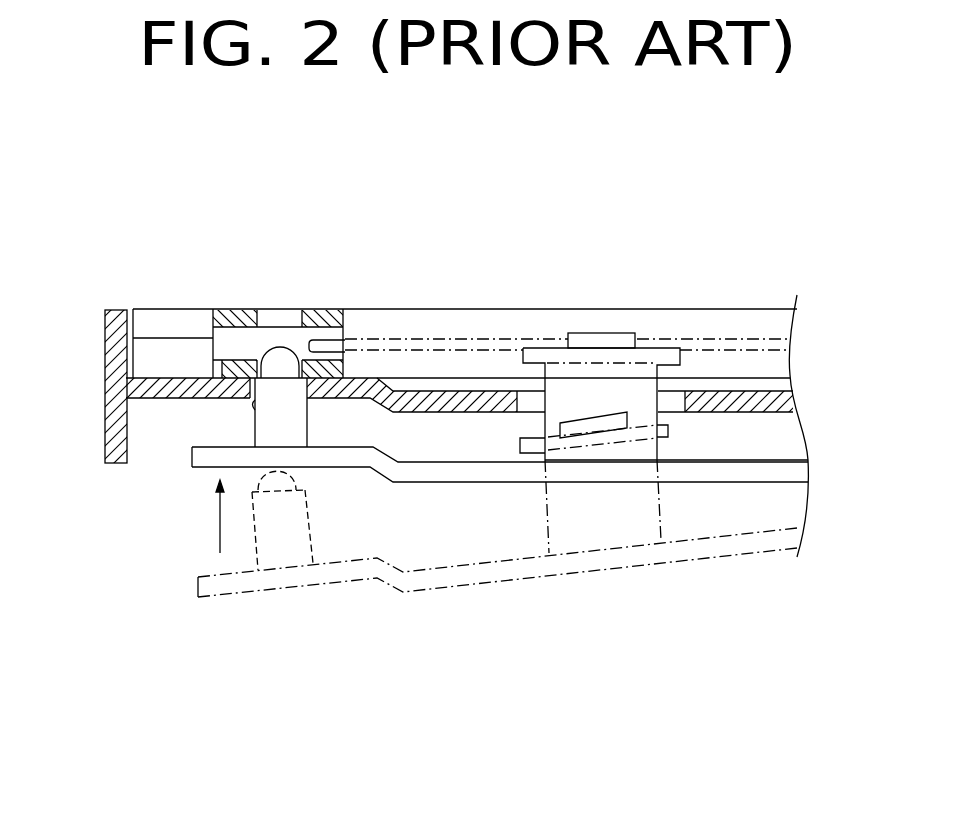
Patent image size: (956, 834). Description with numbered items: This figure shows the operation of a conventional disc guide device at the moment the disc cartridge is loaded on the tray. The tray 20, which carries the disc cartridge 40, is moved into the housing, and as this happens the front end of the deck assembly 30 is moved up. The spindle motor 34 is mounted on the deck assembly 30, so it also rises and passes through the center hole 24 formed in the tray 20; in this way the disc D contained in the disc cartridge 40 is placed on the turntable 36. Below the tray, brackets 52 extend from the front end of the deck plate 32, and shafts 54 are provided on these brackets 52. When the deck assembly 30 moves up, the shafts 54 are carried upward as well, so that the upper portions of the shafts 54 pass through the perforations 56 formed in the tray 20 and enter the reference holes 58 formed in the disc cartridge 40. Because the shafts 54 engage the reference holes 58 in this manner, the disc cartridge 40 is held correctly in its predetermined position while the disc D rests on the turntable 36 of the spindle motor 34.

The tray 20 is at (110, 363).
The disc cartridge 40 is at (175, 323).
The reference holes 58 is at (283, 315).
The disc D is at (692, 340).
The turntable 36 is at (592, 358).
The center hole 24 is at (537, 420).
The spindle motor 34 is at (640, 415).
The shafts 54 is at (307, 425).
The perforations 56 is at (253, 407).
The brackets 52 is at (333, 458).
The deck plate 32 is at (477, 475).
The deck assembly 30 is at (534, 603).